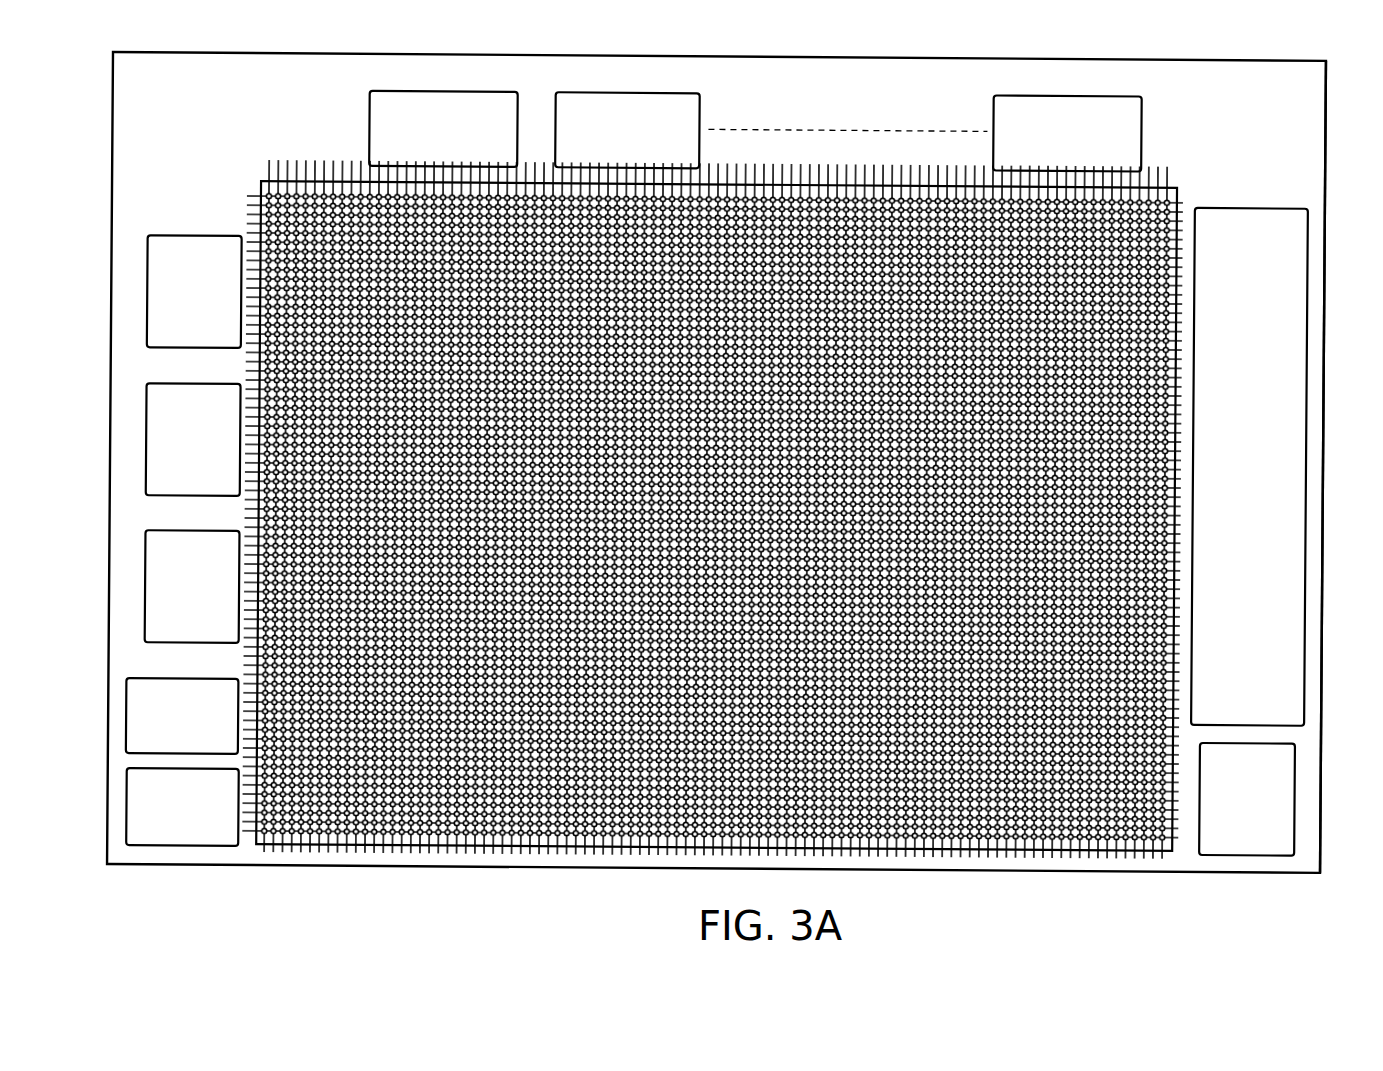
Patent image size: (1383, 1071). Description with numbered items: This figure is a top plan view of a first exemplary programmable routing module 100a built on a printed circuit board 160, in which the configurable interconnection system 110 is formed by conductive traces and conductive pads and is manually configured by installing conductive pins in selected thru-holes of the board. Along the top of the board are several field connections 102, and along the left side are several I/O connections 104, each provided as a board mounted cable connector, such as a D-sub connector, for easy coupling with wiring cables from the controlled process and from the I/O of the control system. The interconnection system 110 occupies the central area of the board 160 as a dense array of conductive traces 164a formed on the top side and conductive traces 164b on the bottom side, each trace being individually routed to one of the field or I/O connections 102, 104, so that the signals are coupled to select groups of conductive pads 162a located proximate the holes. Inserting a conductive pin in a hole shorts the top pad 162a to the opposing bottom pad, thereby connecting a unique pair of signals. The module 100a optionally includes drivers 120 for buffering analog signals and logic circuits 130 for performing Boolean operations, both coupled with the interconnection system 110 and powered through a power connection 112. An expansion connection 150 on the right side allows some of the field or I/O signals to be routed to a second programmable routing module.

The programmable routing module 100a is at (113, 93).
The printed circuit board 160 is at (1306, 127).
The configurable interconnection system 110 is at (262, 183).
The field connection 102 is at (1086, 151).
The I/O connection 104 is at (213, 631).
The drivers 120 is at (170, 741).
The logic circuits 130 is at (171, 832).
The expansion connection 150 is at (1235, 504).
The power connection 112 is at (1235, 834).
The conductive traces 164a is at (1168, 170).
The conductive traces 164b is at (254, 656).
The conductive pads 162a is at (262, 841).